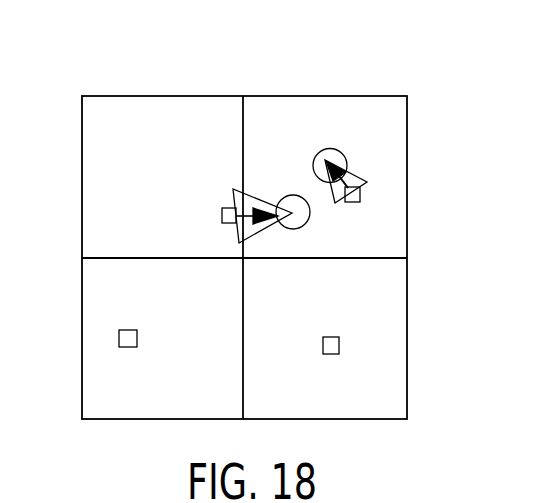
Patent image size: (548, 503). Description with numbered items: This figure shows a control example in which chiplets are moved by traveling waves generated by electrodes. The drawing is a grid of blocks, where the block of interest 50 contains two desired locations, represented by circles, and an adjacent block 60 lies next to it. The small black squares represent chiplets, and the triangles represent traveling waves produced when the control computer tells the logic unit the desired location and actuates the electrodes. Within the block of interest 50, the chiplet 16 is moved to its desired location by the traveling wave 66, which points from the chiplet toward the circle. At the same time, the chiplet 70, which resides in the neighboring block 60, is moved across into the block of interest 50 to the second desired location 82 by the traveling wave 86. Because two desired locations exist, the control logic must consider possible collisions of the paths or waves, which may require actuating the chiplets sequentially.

The chiplet 16 is at (360, 195).
The block of interest 50 is at (407, 96).
The adjacent block 60 is at (110, 96).
The traveling wave 66 is at (358, 177).
The chiplet 70 is at (222, 215).
The desired location 82 is at (303, 228).
The traveling wave 86 is at (253, 228).